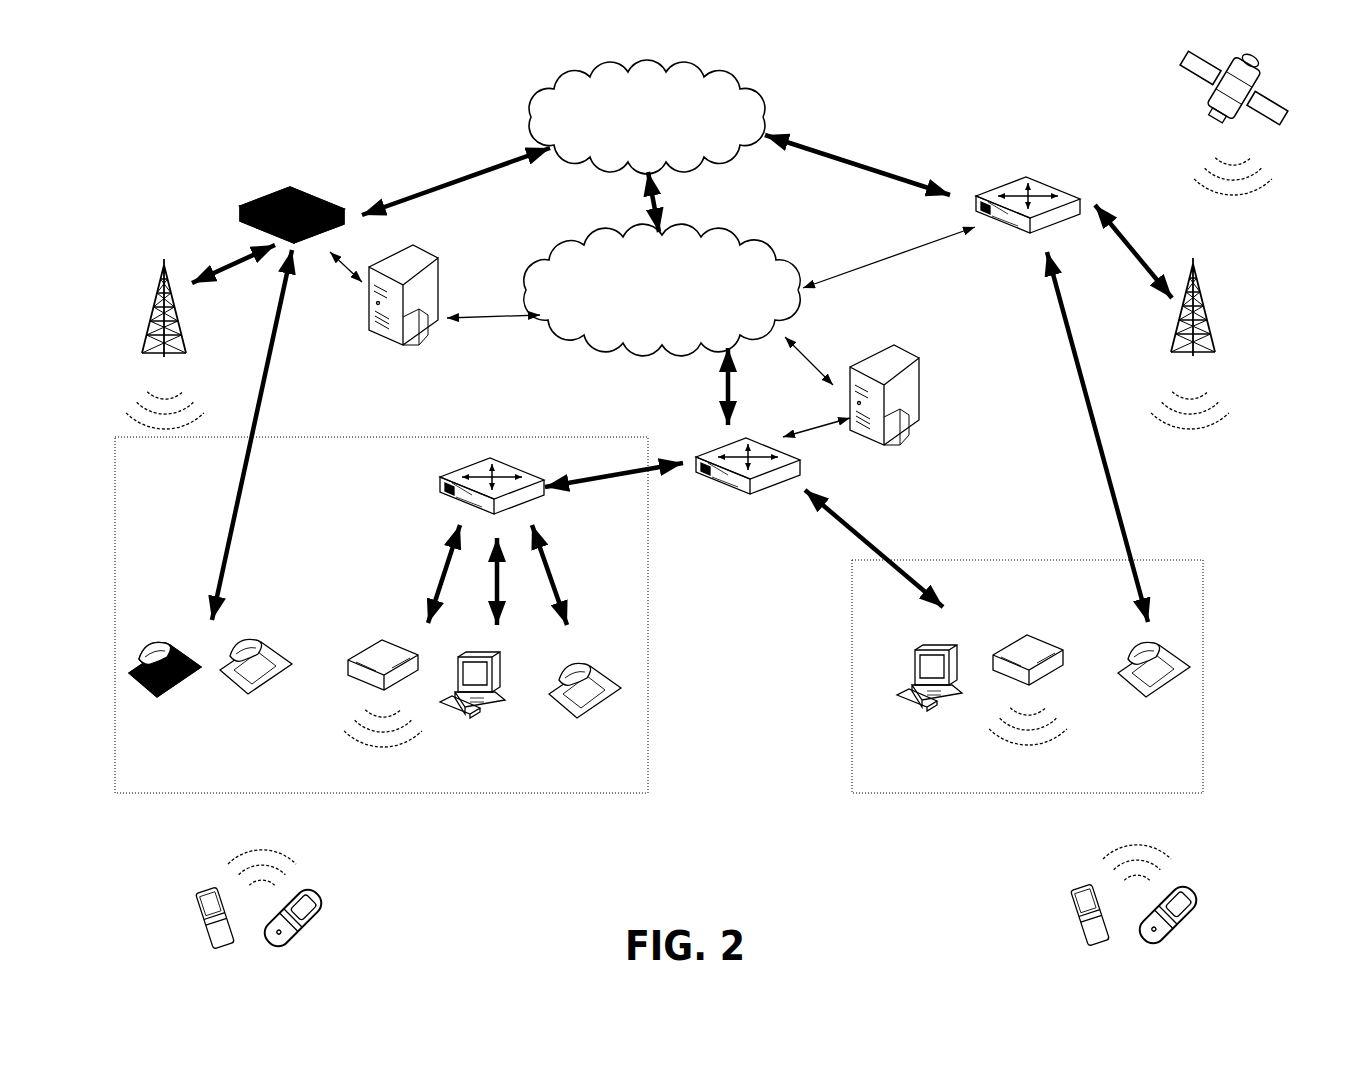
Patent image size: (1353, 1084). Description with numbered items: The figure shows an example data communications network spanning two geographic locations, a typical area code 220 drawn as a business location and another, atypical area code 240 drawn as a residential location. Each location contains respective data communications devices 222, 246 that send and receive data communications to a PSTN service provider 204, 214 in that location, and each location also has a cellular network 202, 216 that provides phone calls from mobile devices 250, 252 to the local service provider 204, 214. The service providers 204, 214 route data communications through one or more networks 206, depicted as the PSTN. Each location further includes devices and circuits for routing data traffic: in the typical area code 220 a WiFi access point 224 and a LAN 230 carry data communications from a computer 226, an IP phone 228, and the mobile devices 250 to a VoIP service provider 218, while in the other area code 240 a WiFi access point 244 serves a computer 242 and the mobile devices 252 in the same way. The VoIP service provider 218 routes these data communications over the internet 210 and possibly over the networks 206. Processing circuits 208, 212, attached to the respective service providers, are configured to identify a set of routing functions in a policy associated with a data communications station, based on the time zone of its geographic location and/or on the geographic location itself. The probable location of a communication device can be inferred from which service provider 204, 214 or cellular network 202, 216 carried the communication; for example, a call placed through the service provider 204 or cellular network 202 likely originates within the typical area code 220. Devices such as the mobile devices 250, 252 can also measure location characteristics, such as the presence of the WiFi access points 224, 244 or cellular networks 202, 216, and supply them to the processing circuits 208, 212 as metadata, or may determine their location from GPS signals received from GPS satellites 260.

The cellular network 202 is at (155, 262).
The service provider 204 is at (342, 195).
The networks 206 is at (555, 75).
The processing circuit 208 is at (416, 248).
The internet 210 is at (769, 250).
The processing circuit 212 is at (901, 340).
The service provider 214 is at (1079, 186).
The cellular network 216 is at (1197, 262).
The service provider 218 is at (801, 460).
The typical area code 220 is at (624, 434).
The data communications devices 222 is at (252, 612).
The WiFi access point 224 is at (394, 655).
The computer 226 is at (482, 655).
The IP phone 228 is at (575, 655).
The LAN 230 is at (542, 455).
The other area code 240 is at (1189, 560).
The computer 242 is at (917, 627).
The WiFi access point 244 is at (1010, 653).
The data communications device 246 is at (1162, 626).
The mobile devices 250 is at (297, 870).
The mobile devices 252 is at (1174, 862).
The GPS satellites 260 is at (1254, 60).